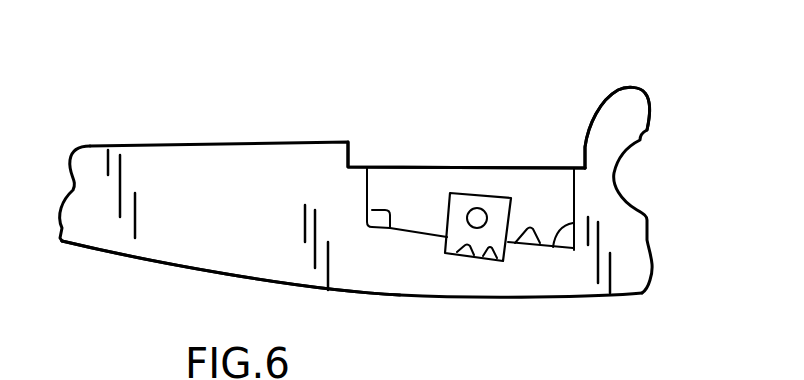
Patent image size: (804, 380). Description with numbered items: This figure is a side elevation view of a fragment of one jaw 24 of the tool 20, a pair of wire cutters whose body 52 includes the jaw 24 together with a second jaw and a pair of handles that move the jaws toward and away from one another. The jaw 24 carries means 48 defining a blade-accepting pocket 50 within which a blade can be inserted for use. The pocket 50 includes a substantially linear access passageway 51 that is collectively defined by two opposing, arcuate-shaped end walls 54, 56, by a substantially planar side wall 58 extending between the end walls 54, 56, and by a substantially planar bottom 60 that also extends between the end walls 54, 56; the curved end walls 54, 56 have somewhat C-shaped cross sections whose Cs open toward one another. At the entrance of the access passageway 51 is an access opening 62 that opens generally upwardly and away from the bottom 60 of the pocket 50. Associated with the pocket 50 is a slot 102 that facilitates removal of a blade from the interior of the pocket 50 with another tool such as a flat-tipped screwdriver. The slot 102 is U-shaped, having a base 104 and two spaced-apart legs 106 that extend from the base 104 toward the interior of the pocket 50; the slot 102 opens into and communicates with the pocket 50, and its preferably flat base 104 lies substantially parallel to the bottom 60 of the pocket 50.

The tool 20 is at (677, 91).
The jaw 24 is at (220, 173).
The means defining a blade-accepting pocket 48 is at (594, 82).
The blade-accepting pocket 50 is at (372, 186).
The access passageway 51 is at (573, 188).
The body 52 is at (195, 248).
The end wall 54 is at (388, 230).
The end wall 56 is at (555, 249).
The side wall 58 is at (527, 185).
The bottom 60 is at (537, 246).
The access opening 62 is at (398, 178).
The slot 102 is at (467, 257).
The base 104 is at (497, 262).
The legs 106 is at (508, 232).